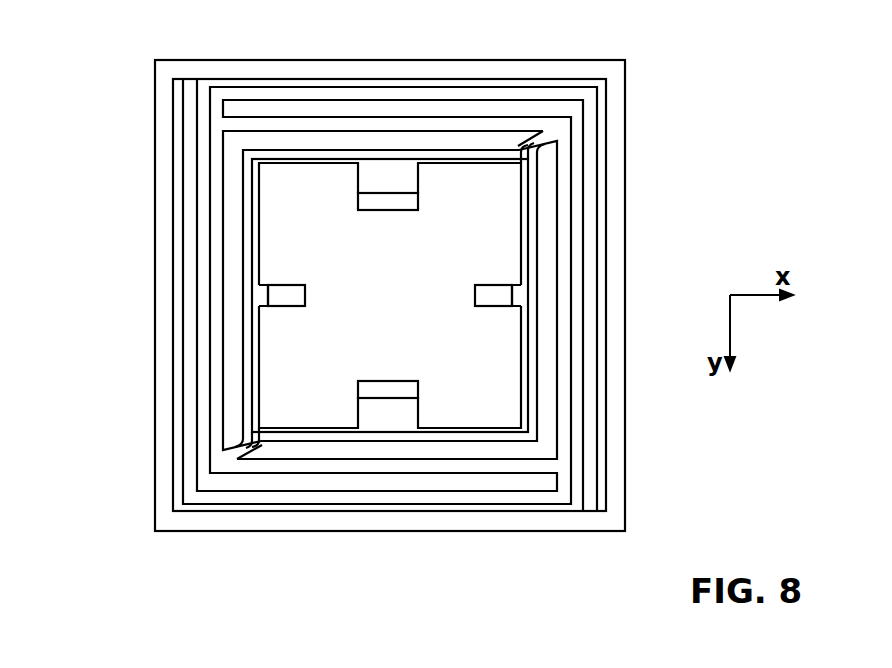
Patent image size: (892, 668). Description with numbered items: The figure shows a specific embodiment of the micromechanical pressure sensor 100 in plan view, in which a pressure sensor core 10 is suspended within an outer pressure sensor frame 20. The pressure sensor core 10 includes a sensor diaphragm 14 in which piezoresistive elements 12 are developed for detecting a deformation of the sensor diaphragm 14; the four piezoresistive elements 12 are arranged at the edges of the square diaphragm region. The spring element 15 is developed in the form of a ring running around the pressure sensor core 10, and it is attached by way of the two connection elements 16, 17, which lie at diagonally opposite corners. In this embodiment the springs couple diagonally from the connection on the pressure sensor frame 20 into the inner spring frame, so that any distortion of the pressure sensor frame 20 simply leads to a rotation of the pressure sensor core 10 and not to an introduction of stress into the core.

The micromechanical pressure sensor 100 is at (391, 315).
The pressure sensor frame 20 is at (625, 150).
The connection element 17 is at (180, 110).
The spring element 15 is at (256, 88).
The connection element 16 is at (521, 128).
The pressure sensor core 10 is at (250, 213).
The piezoresistive elements 12 is at (357, 200).
The sensor diaphragm 14 is at (404, 309).